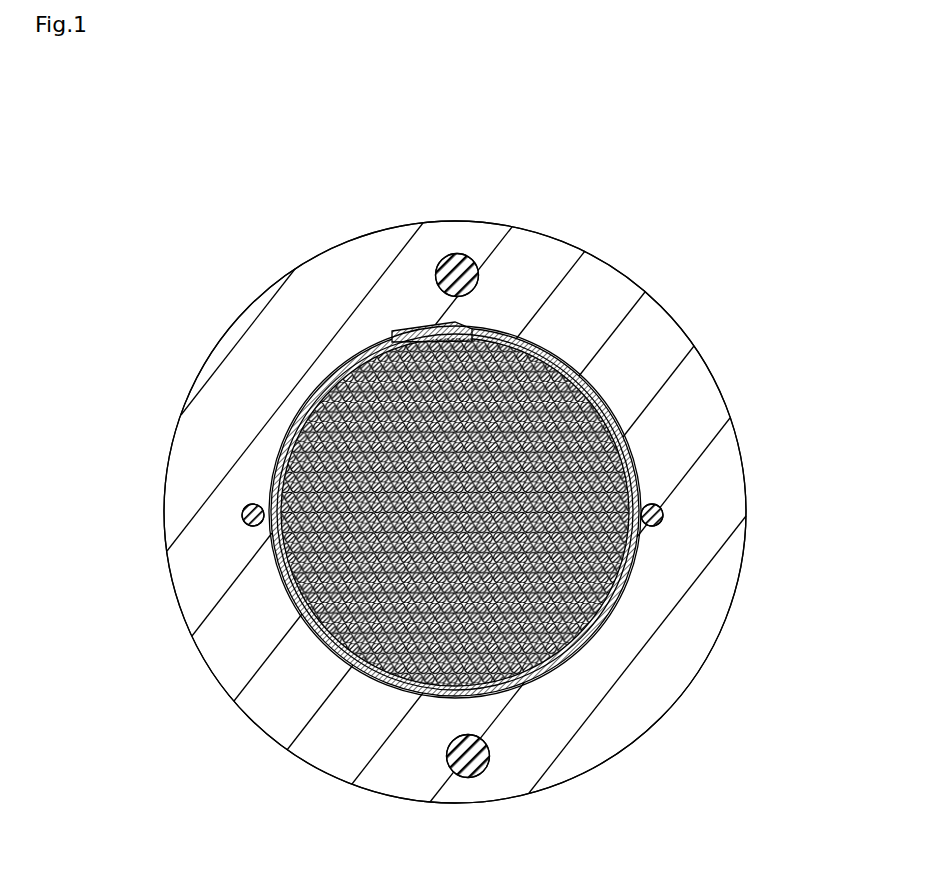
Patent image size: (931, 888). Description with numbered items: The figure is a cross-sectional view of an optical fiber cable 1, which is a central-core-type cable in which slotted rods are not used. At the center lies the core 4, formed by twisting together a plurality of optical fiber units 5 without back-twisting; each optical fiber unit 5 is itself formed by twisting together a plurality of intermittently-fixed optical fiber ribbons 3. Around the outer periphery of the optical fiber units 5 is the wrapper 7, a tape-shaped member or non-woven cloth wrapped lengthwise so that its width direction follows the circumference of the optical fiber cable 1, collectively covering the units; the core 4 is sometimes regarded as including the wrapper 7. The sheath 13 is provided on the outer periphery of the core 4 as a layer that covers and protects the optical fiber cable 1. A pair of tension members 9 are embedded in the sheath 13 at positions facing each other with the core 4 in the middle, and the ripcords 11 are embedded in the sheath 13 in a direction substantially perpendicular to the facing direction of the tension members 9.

The optical fiber cable 1 is at (590, 203).
The intermittently-fixed optical fiber ribbon 3 is at (455, 444).
The core 4 is at (527, 512).
The optical fiber unit 5 is at (500, 497).
The wrapper 7 is at (494, 550).
The tension member 9 is at (522, 799).
The ripcord 11 is at (714, 588).
The sheath 13 is at (455, 533).